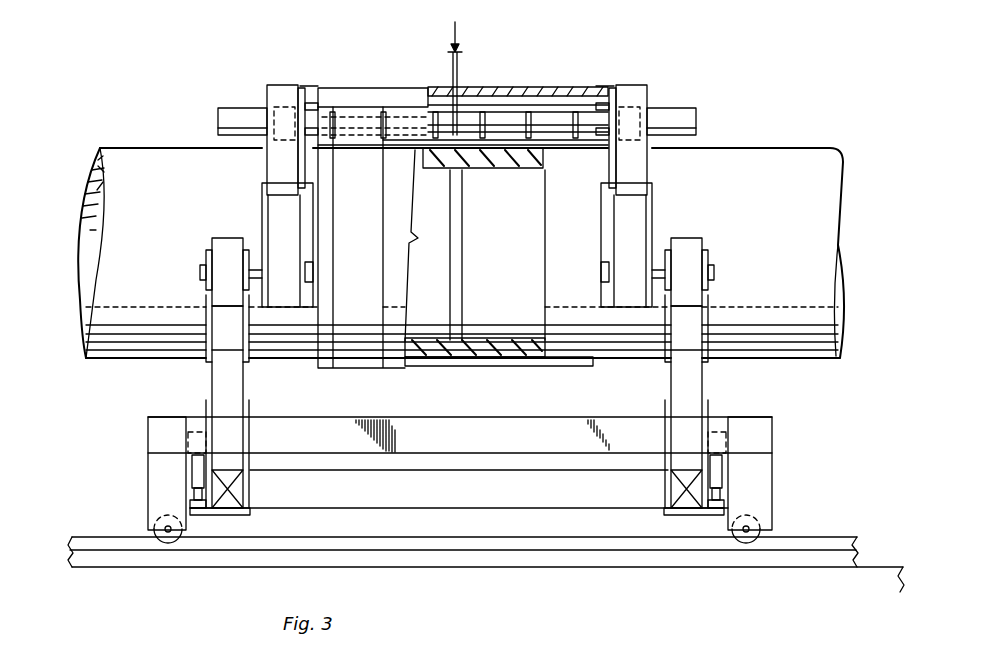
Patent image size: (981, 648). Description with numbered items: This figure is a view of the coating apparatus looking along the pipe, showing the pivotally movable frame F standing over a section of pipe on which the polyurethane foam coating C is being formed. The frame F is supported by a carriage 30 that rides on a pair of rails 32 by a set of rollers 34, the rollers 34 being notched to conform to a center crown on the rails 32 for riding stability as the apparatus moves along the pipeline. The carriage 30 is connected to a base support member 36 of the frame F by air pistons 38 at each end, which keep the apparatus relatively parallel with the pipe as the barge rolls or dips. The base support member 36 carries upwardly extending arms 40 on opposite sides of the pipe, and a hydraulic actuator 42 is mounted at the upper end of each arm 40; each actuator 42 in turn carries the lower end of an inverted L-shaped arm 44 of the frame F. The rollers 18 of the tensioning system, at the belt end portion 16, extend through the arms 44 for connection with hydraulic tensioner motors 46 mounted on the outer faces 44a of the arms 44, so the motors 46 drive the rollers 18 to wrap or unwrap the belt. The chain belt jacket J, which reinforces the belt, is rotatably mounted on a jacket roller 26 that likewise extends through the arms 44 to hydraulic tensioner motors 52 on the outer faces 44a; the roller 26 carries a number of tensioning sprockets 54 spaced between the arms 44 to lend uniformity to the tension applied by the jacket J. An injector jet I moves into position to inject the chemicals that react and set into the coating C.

The end portion of belt 16 is at (528, 87).
The roller 18 is at (600, 96).
The tensioner roller 26 is at (545, 118).
The carriage 30 is at (758, 438).
The rail 32 is at (808, 552).
The roller 34 is at (170, 540).
The base support member 36 is at (390, 508).
The air piston 38 is at (200, 473).
The arm 40 is at (222, 378).
The hydraulic actuator 42 is at (230, 238).
The inverted L-shaped arm 44 is at (273, 165).
The outer face of arm 44a is at (268, 93).
The hydraulic tensioner motor 46 is at (226, 105).
The hydraulic tensioner motor 52 is at (287, 105).
The tensioning sprocket 54 is at (431, 127).
The frame F is at (173, 291).
The injector jet I is at (450, 73).
The chain belt jacket J is at (360, 226).
The coating C is at (468, 352).